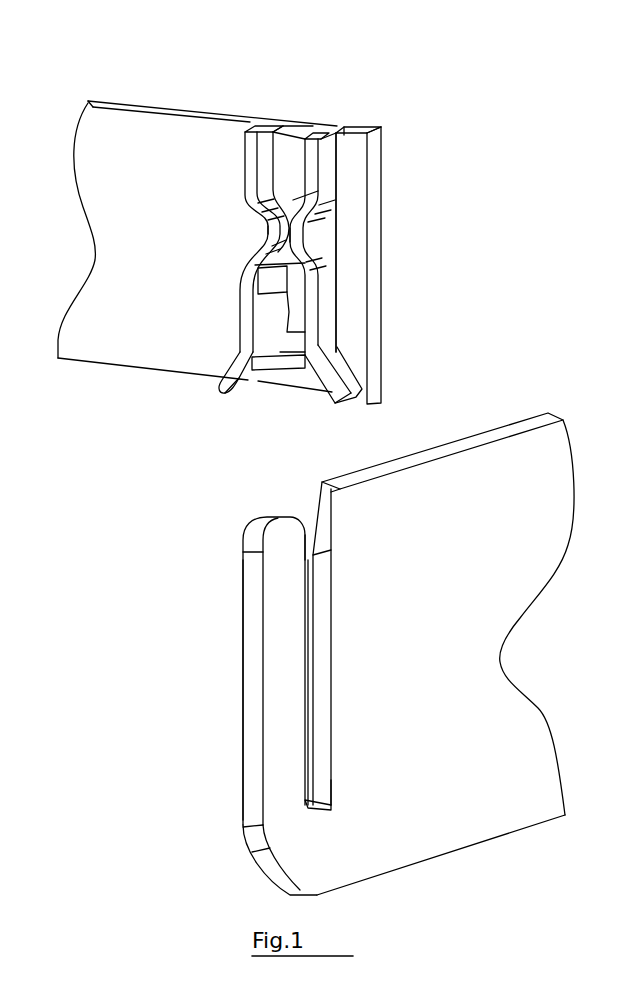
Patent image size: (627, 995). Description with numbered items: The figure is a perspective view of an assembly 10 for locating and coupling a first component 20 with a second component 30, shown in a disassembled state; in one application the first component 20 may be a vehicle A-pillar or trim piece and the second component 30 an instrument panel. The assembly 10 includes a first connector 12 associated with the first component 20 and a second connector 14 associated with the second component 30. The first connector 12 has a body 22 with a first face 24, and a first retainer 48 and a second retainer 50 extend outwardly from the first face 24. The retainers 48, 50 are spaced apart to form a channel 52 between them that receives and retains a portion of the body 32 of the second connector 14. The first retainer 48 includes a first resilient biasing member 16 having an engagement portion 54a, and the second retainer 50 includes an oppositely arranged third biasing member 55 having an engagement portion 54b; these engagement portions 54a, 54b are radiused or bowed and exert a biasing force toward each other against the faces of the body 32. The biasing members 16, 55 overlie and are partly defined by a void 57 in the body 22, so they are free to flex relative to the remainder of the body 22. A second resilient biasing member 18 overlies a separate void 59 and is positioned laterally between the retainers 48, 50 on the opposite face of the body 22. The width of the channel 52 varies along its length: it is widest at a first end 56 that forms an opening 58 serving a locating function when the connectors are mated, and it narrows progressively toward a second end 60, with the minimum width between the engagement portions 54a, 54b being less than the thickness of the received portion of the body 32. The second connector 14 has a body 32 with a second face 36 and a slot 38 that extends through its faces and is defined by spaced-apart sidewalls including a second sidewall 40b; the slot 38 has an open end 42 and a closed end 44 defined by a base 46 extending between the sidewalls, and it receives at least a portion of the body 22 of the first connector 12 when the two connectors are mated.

The assembly 10 is at (508, 243).
The first connector 12 is at (350, 128).
The second connector 14 is at (257, 725).
The first resilient biasing member 16 is at (277, 184).
The second resilient biasing member 18 is at (382, 352).
The first component 20 is at (157, 206).
The body 22 is at (334, 270).
The first face 24 is at (354, 190).
The second component 30 is at (476, 623).
The body 32 is at (255, 628).
The second face 36 is at (367, 500).
The slot 38 is at (308, 520).
The second sidewall 40b is at (316, 585).
The open end 42 is at (230, 508).
The closed end 44 is at (355, 778).
The base 46 is at (320, 808).
The first retainer 48 is at (255, 217).
The second retainer 50 is at (293, 233).
The channel 52 is at (293, 150).
The engagement portion 54a is at (268, 238).
The engagement portion 54b is at (291, 237).
The third biasing member 55 is at (300, 322).
The first end 56 is at (203, 388).
The void 57 is at (298, 206).
The opening 58 is at (237, 375).
The void 59 is at (285, 313).
The second end 60 is at (250, 100).